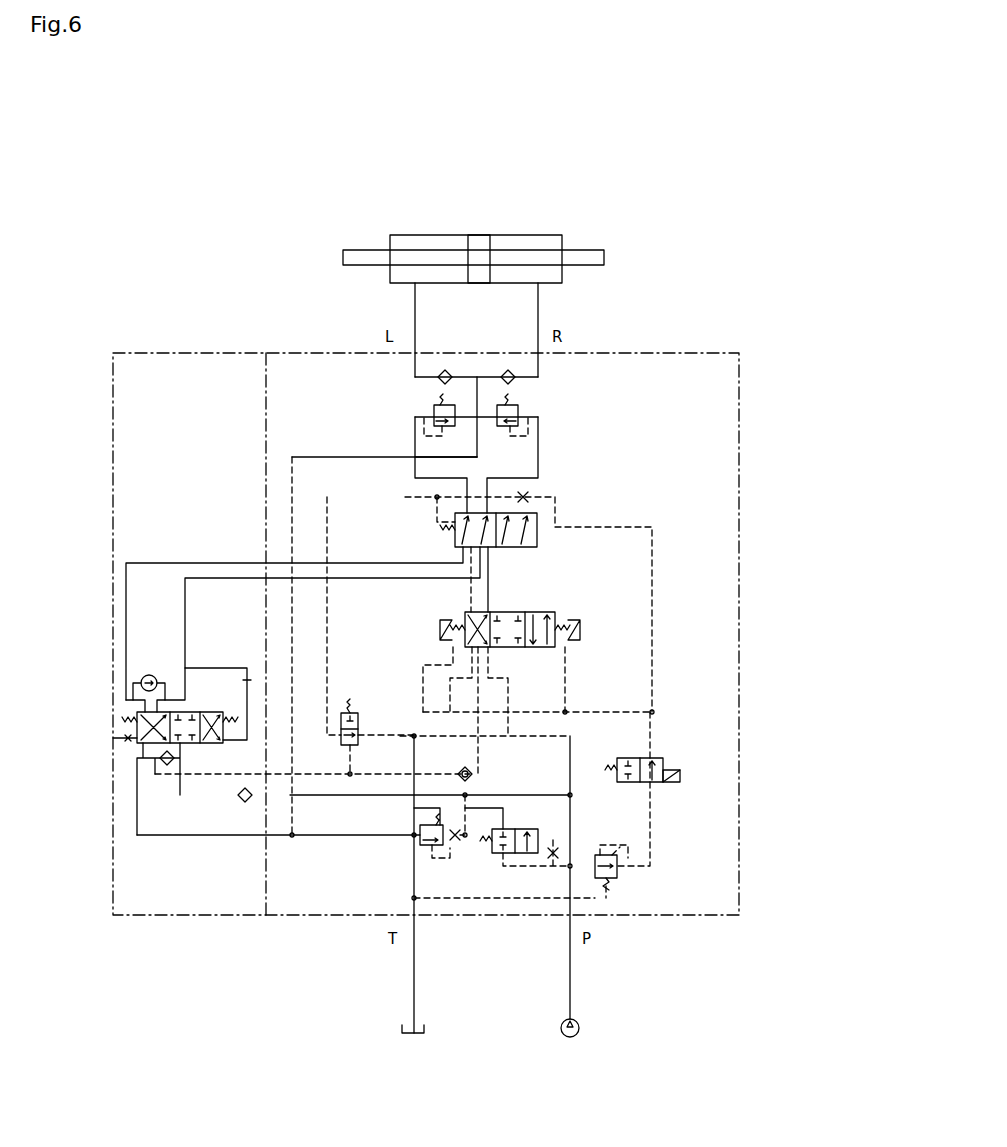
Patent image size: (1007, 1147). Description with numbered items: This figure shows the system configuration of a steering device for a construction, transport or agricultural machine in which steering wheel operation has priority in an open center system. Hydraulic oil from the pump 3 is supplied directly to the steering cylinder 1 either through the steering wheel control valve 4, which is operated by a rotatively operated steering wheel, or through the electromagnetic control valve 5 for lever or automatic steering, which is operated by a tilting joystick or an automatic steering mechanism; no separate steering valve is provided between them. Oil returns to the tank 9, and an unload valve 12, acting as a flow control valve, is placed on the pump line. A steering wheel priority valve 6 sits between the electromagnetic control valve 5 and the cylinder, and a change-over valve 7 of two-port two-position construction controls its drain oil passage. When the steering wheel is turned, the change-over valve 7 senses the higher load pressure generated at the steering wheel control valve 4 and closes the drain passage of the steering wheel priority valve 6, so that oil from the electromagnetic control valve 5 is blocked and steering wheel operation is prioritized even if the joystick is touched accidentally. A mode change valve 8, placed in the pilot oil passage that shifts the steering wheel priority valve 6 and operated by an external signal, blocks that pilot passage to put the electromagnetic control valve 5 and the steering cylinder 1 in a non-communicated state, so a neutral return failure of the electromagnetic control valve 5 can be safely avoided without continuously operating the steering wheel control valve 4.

The steering cylinder 1 is at (394, 306).
The pump 3 is at (621, 887).
The steering wheel control valve 4 is at (131, 750).
The electromagnetic control valve for lever or automatic steering 5 is at (455, 610).
The steering wheel priority valve 6 is at (545, 537).
The change-over valve 7 is at (341, 750).
The mode change valve 8 is at (673, 790).
The tank 9 is at (425, 905).
The unload valve (flow control valve) 12 is at (495, 857).